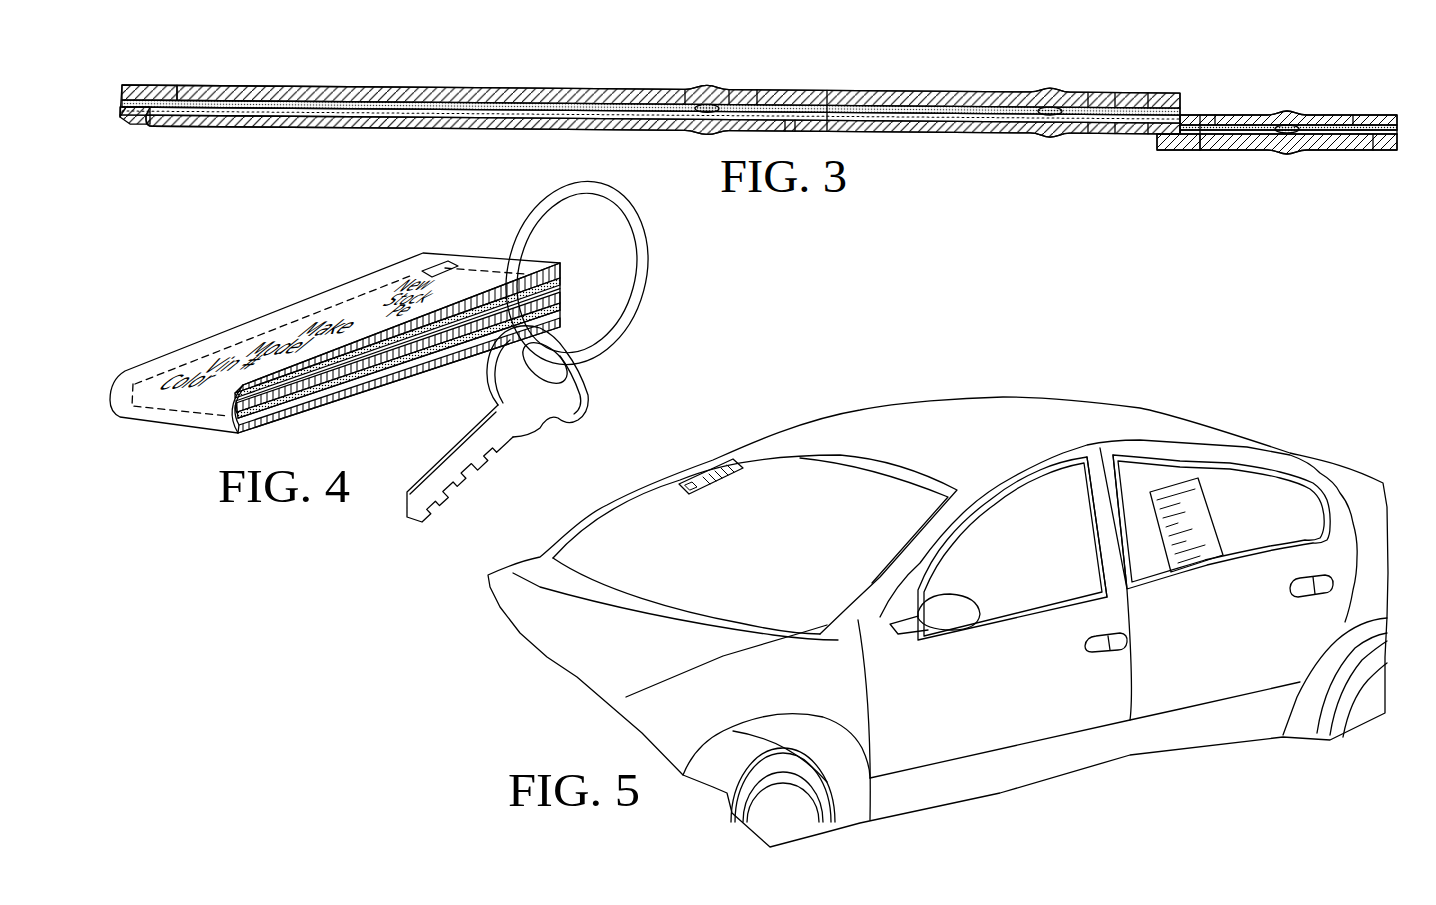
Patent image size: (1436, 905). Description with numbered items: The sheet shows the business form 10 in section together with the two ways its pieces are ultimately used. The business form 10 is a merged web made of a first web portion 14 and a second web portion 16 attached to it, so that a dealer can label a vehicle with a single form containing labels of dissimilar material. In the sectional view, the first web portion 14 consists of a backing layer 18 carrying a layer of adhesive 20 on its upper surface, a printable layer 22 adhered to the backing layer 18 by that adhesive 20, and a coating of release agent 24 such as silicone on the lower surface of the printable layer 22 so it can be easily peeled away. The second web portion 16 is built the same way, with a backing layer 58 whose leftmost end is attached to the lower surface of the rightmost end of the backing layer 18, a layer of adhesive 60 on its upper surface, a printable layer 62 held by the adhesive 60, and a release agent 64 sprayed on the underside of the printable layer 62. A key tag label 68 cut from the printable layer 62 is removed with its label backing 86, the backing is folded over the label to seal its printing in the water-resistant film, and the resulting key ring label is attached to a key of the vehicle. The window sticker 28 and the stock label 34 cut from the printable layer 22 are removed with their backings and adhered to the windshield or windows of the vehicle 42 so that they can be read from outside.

In FIG. 3, the business form 10 is at (905, 79).
In FIG. 3, the first web portion 14 is at (571, 76).
In FIG. 3, the second web portion 16 is at (1248, 98).
In FIG. 3, the backing layer 18 is at (343, 127).
In FIG. 3, the adhesive 20 is at (369, 112).
In FIG. 3, the printable layer 22 is at (317, 86).
In FIG. 3, the release agent 24 is at (345, 102).
In FIG. 3, the backing layer 58 is at (1329, 151).
In FIG. 3, the adhesive 60 is at (1351, 143).
In FIG. 4, the adhesive 60 is at (331, 392).
In FIG. 3, the printable layer 62 is at (1313, 115).
In FIG. 3, the release agent 64 is at (1331, 122).
In FIG. 4, the release agent 64 is at (372, 382).
In FIG. 4, the key tag label 68 is at (414, 340).
In FIG. 4, the label backing 86 is at (288, 414).
In FIG. 5, the vehicle 42 is at (1095, 413).
In FIG. 5, the stock label 34 is at (704, 474).
In FIG. 5, the window sticker 28 is at (1204, 530).